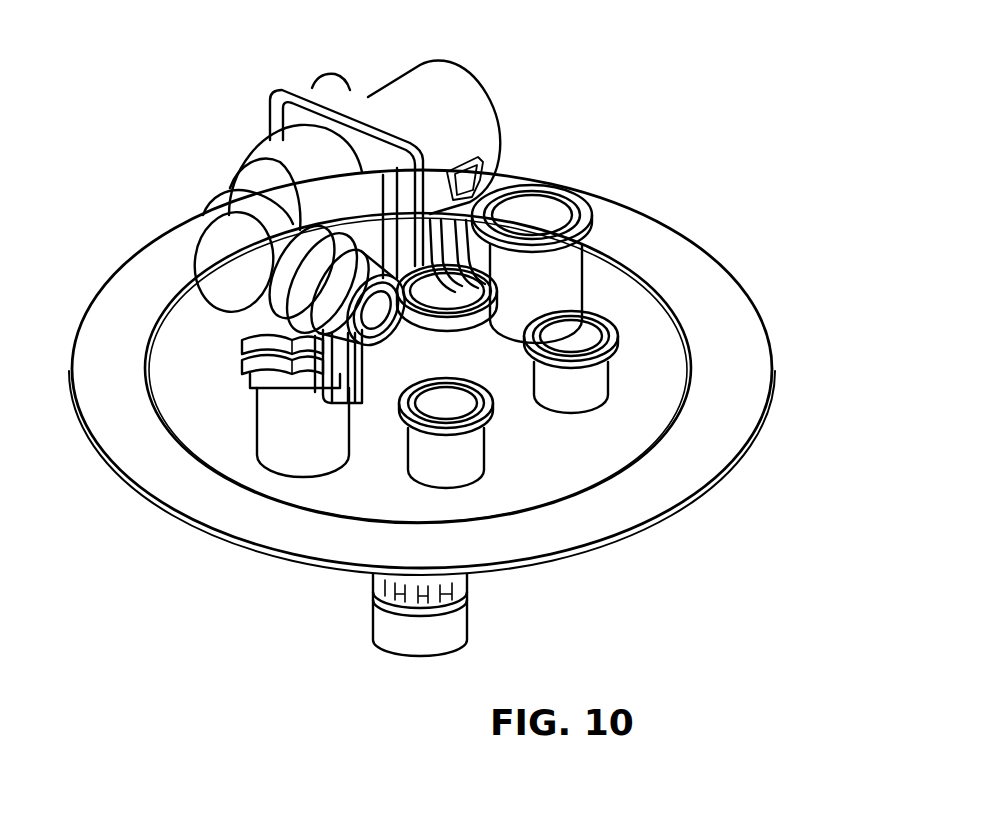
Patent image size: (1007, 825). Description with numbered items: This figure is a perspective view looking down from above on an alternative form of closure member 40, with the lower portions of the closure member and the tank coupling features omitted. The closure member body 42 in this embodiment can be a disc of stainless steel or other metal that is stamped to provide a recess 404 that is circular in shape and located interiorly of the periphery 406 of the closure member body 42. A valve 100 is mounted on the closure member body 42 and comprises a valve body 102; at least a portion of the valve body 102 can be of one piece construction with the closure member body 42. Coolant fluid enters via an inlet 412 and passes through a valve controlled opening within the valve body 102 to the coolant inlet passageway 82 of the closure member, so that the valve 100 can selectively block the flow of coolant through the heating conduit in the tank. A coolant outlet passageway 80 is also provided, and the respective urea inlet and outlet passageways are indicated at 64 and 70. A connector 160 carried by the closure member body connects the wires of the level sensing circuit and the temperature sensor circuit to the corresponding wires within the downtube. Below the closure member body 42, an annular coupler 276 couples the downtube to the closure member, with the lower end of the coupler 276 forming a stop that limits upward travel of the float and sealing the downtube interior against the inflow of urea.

The valve 100 is at (212, 84).
The connector 160 is at (458, 86).
The valve body 102 is at (243, 150).
The coolant outlet passageway 80 is at (582, 279).
The urea inlet passageway 64 is at (606, 373).
The urea outlet passageway 70 is at (486, 449).
The coolant inlet passageway 82 is at (255, 408).
The inlet 412 is at (395, 329).
The closure member 40 is at (762, 458).
The closure member body 42 is at (648, 498).
The periphery 406 is at (622, 542).
The recess 404 is at (545, 503).
The annular coupler 276 is at (375, 617).